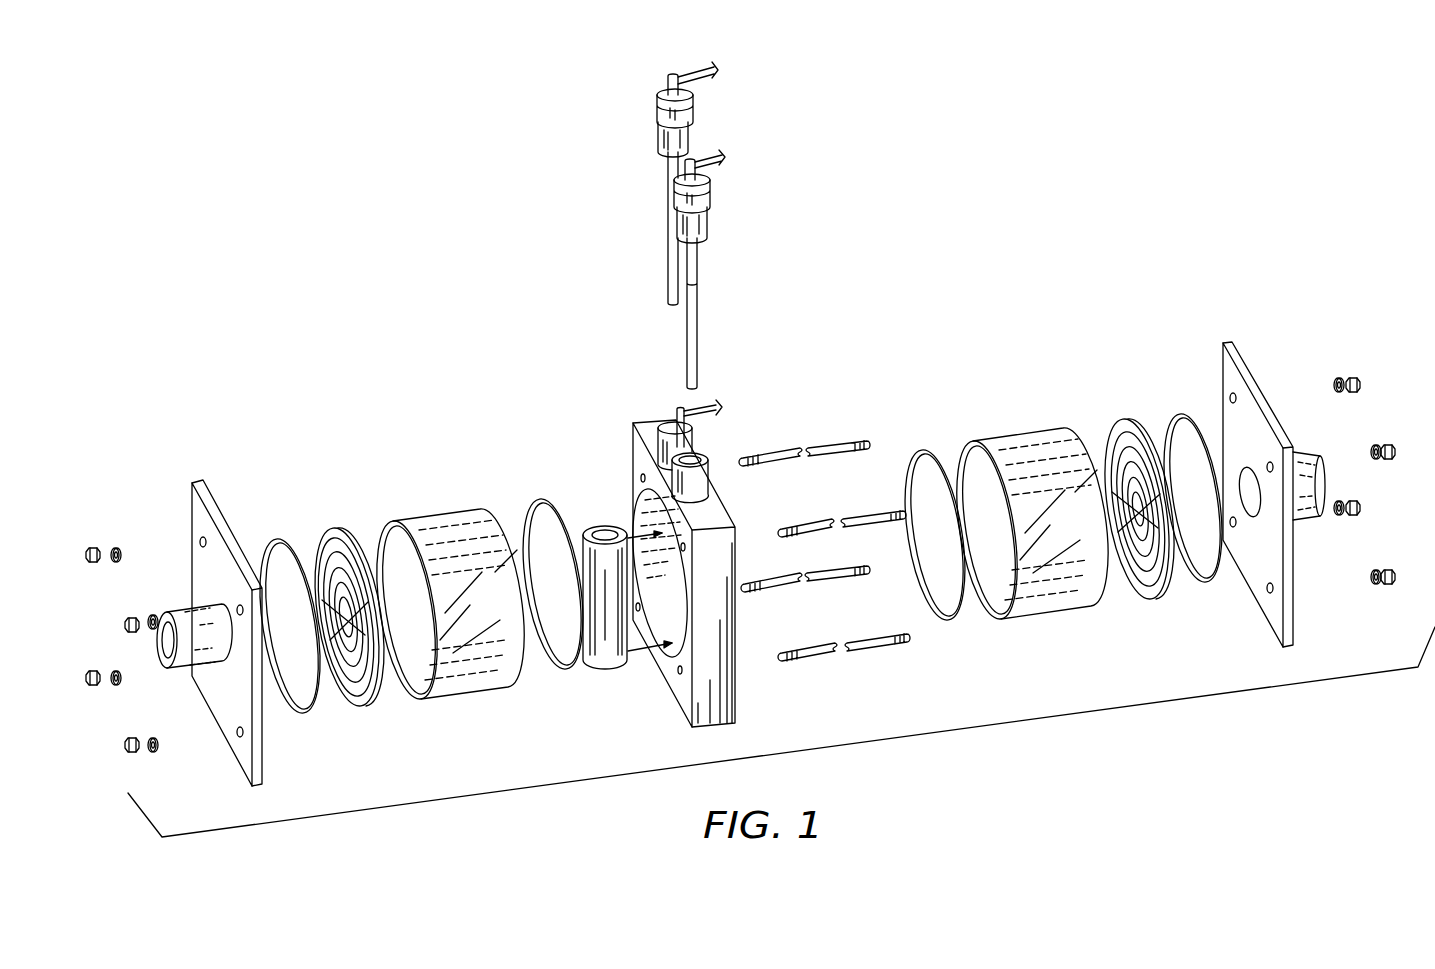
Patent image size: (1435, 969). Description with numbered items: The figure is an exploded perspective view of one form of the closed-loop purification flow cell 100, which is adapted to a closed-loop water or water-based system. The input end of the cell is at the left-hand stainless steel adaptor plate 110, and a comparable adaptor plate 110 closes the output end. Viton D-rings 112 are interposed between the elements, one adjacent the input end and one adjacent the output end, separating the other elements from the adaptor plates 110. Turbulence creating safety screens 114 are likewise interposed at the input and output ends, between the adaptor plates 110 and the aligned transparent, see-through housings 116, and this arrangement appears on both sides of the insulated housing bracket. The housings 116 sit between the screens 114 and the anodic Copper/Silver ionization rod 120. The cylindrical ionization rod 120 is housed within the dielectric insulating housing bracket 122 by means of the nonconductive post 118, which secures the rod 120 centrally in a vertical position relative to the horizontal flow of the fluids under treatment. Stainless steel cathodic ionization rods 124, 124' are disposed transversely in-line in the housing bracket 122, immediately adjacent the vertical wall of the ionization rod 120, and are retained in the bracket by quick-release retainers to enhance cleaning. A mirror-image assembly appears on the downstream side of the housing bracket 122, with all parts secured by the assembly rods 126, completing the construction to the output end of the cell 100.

The flow cell 100 is at (943, 335).
The stainless steel adaptor plate 110 is at (212, 507).
The Viton D-ring 112 is at (280, 537).
The turbulence creating safety screen 114 is at (343, 525).
The transparent see-through housing 116 is at (438, 520).
The nonconductive post 118 is at (692, 433).
The anodic Copper/Silver ionization rod 120 is at (605, 520).
The dielectric insulating housing bracket 122 is at (717, 517).
The stainless steel cathodic ionization rod 124 is at (725, 269).
The stainless steel cathodic ionization rod 124' is at (718, 183).
The assembly rod 126 is at (827, 447).